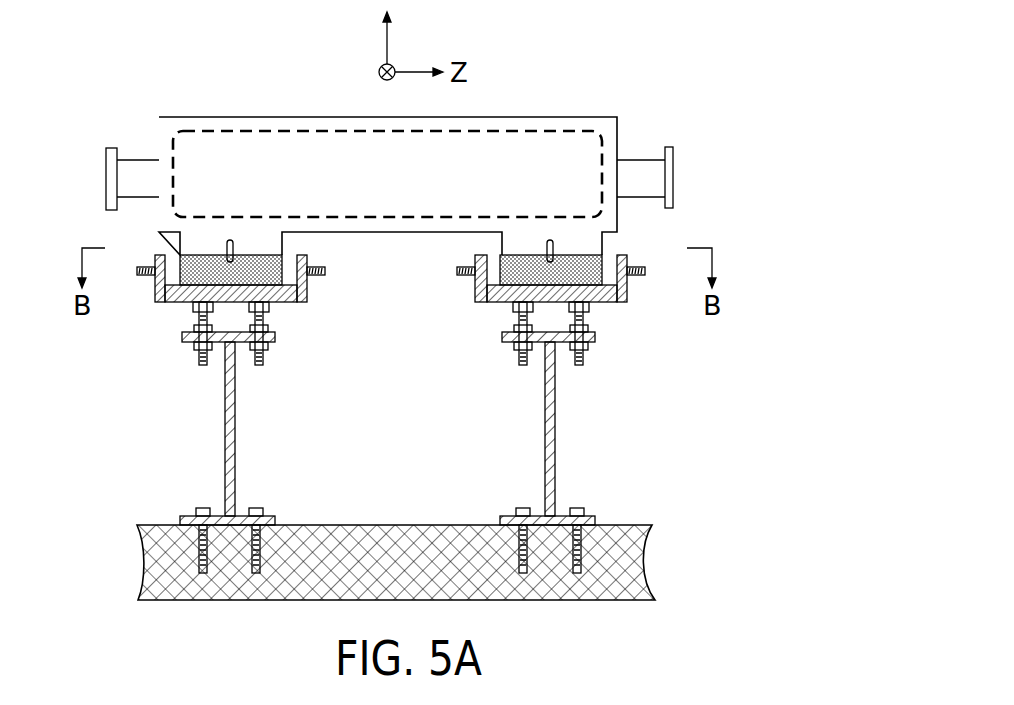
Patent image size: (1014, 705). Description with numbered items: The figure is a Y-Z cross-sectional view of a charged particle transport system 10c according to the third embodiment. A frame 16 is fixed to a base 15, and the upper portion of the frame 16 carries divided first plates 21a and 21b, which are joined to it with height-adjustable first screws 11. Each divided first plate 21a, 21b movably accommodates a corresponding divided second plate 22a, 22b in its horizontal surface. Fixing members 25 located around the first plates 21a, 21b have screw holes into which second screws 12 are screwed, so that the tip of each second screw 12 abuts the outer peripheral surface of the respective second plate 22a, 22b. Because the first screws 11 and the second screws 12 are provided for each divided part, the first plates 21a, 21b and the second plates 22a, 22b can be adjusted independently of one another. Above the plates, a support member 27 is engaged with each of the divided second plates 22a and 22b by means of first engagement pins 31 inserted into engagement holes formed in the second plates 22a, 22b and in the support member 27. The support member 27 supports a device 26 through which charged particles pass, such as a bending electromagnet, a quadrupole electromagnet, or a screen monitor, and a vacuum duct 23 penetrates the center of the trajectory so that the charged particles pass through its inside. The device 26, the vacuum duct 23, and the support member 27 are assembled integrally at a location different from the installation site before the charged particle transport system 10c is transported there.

The charged particle transport system 10c is at (170, 78).
The first screws 11 is at (196, 360).
The second screws 12 is at (143, 276).
The base 15 is at (405, 525).
The frame 16 is at (225, 440).
The first plate 21a is at (276, 292).
The first plate 21b is at (508, 292).
The second plate 22a is at (255, 268).
The second plate 22b is at (526, 268).
The vacuum duct 23 is at (105, 178).
The fixing members 25 is at (475, 293).
The device 26 is at (290, 131).
The support member 27 is at (517, 117).
The first engagement pins 31 is at (236, 246).